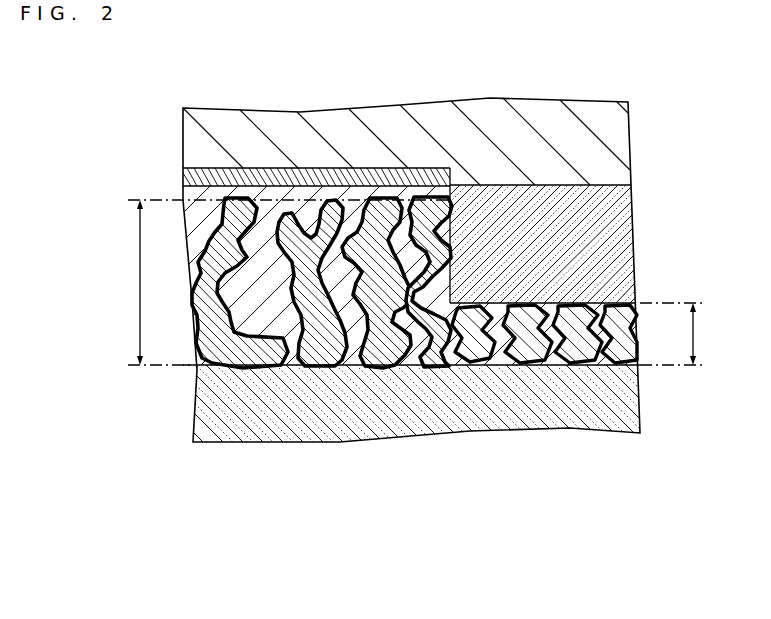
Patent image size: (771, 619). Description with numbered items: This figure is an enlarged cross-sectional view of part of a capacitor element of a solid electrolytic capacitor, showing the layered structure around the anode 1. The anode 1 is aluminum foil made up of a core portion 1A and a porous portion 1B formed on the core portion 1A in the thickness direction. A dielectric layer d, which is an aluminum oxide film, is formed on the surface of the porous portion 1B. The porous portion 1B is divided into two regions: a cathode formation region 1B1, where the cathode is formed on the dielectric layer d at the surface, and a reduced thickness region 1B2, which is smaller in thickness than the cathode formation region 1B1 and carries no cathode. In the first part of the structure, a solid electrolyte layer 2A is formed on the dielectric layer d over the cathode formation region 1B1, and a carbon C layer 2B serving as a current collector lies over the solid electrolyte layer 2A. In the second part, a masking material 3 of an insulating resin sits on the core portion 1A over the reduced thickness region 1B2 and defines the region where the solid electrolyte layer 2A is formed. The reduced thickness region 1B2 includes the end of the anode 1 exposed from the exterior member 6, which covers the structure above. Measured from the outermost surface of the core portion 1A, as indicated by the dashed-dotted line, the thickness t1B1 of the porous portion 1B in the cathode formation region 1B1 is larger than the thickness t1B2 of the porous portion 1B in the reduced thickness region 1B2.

The anode 1 is at (510, 550).
The core portion 1A is at (375, 397).
The porous portion 1B is at (575, 512).
The cathode formation region 1B1 is at (422, 363).
The reduced thickness region 1B2 is at (532, 363).
The solid electrolyte layer 2A is at (278, 208).
The C layer 2B is at (413, 197).
The masking material 3 is at (548, 231).
The exterior member 6 is at (540, 153).
The dielectric layer d is at (330, 197).
The thickness of the porous portion in the cathode formation region t1B1 is at (158, 282).
The thickness of the porous portion in the reduced thickness region t1B2 is at (673, 334).